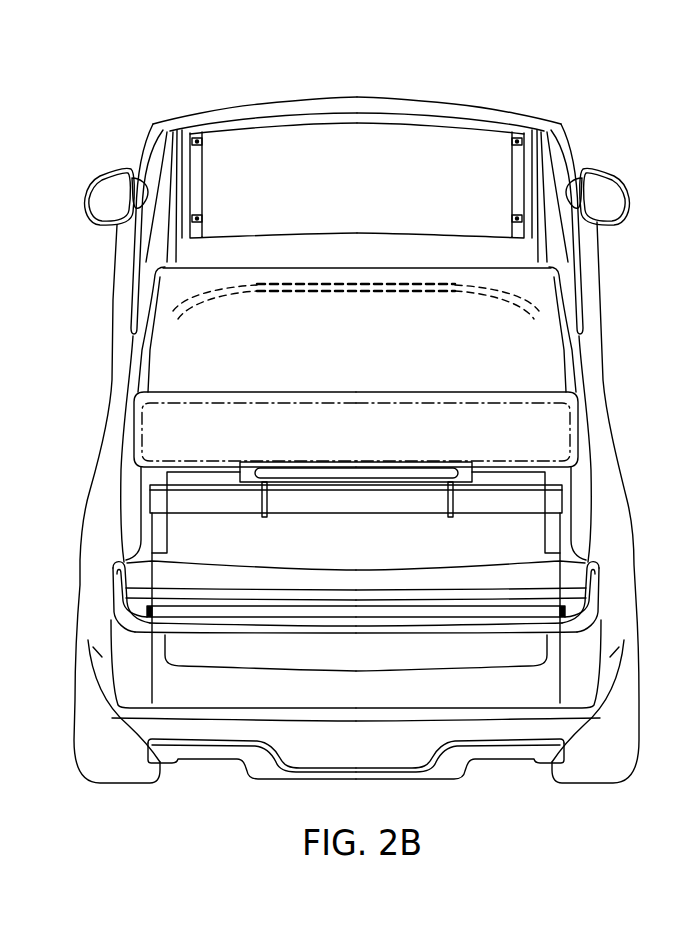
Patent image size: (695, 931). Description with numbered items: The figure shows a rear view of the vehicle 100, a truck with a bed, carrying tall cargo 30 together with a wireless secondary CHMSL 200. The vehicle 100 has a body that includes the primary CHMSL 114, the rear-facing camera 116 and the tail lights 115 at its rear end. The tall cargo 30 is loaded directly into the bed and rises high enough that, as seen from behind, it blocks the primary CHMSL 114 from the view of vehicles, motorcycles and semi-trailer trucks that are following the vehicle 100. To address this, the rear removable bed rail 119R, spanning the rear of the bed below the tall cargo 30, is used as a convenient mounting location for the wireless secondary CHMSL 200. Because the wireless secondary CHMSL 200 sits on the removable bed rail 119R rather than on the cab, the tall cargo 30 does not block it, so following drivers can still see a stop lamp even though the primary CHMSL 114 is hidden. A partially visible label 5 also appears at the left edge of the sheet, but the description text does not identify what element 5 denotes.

The vehicle 100 is at (166, 60).
The tall cargo 30 is at (133, 366).
The primary CHMSL 114 is at (304, 288).
The rear-facing camera 116 is at (358, 291).
The tail lights 115 is at (118, 604).
The removable bed rail 119R is at (147, 497).
The wireless secondary CHMSL 200 is at (363, 472).
The vehicle body 5 is at (4, 645).